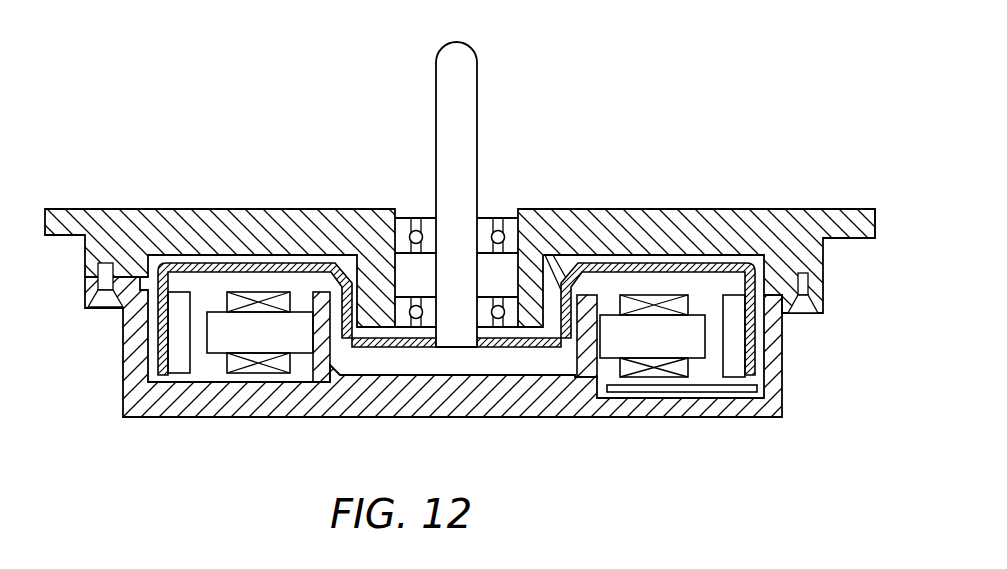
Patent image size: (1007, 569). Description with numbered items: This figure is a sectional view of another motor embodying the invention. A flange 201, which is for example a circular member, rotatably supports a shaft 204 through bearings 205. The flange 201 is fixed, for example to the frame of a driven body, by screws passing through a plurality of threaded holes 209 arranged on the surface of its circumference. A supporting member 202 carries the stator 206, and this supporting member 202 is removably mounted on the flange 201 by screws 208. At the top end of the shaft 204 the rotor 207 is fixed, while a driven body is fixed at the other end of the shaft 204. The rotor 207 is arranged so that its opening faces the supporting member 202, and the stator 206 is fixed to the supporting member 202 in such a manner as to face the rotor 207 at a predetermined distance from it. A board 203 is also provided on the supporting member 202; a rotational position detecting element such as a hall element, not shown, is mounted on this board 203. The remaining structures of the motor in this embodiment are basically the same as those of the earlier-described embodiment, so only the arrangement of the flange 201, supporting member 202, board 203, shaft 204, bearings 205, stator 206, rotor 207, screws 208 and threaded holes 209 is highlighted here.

The flange 201 is at (696, 220).
The supporting member 202 is at (698, 405).
The board 203 is at (757, 398).
The shaft 204 is at (470, 74).
The bearings 205 is at (488, 228).
The stator 206 is at (652, 336).
The rotor 207 is at (237, 268).
The screws 208 is at (816, 314).
The threaded holes 209 is at (846, 234).